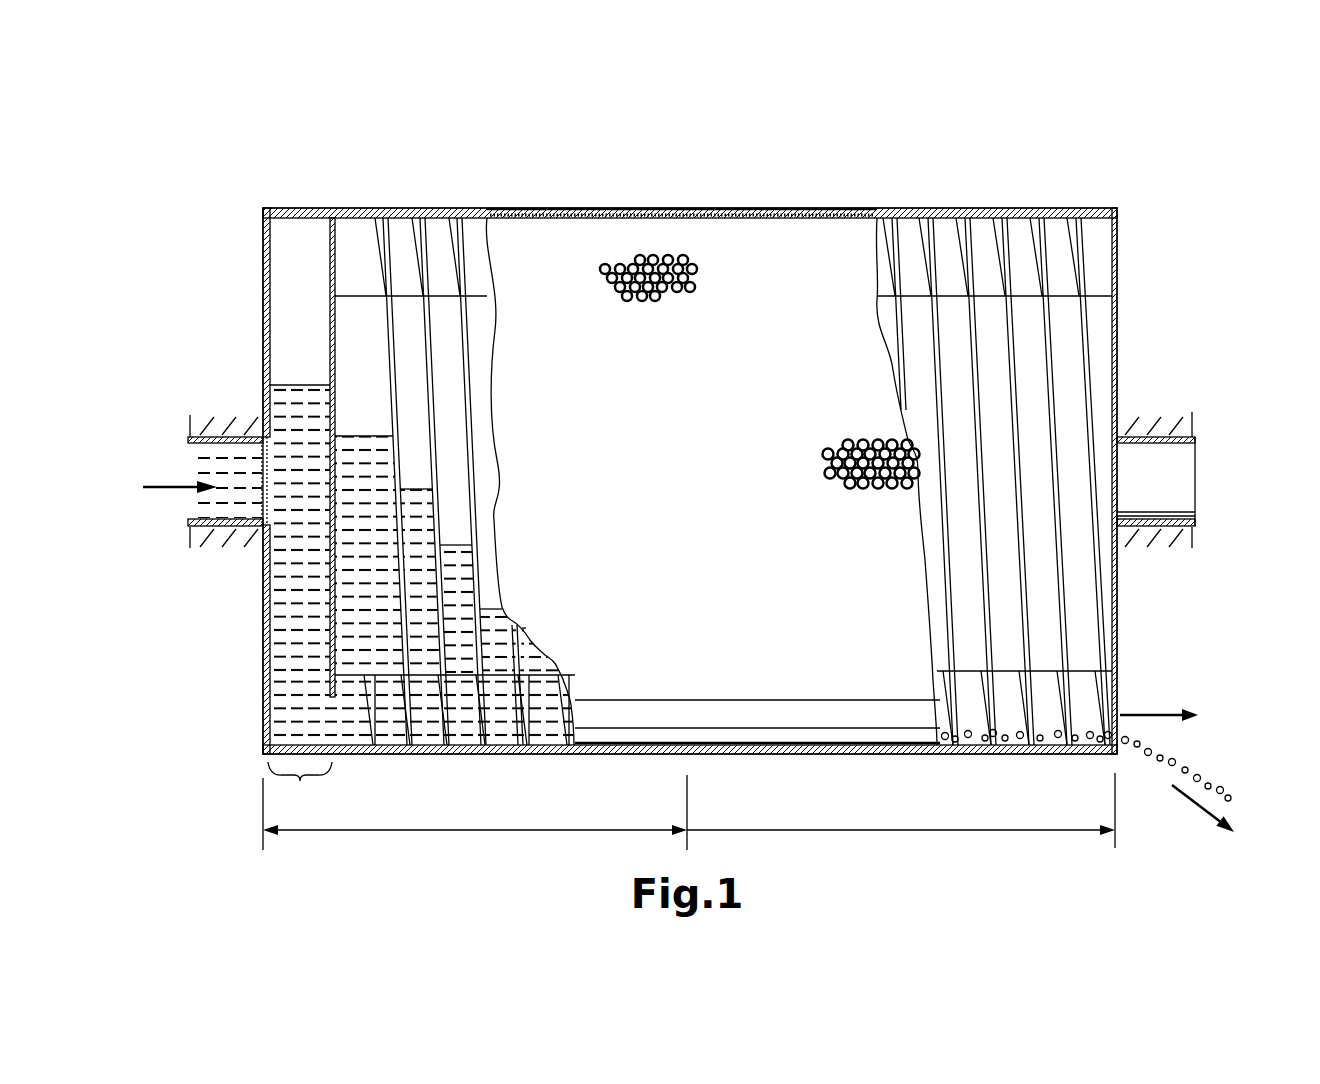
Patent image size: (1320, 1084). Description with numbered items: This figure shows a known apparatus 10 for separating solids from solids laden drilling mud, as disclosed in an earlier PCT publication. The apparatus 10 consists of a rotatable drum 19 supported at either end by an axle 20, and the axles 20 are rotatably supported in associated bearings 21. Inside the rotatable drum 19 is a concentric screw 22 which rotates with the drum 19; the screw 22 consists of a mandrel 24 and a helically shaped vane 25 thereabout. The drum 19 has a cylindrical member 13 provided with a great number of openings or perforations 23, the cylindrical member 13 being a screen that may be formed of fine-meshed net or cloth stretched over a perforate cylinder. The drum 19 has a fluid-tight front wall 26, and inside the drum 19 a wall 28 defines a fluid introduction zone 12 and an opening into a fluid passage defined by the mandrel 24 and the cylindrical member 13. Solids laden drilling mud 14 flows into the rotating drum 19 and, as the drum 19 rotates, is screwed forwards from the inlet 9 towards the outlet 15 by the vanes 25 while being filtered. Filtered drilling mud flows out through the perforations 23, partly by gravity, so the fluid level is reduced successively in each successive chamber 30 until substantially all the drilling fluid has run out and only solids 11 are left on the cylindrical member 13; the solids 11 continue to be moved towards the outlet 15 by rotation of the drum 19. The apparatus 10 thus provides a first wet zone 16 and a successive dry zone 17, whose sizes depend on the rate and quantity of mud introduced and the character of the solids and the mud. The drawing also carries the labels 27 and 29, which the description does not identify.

The apparatus for separating solids from solids laden drilling mud 10 is at (512, 203).
The rotatable drum 19 is at (290, 210).
The fluid introduction zone 12 is at (285, 605).
The concentric screw 22 is at (1115, 320).
The fluid-tight front wall 26 is at (265, 660).
The wall 28 is at (330, 300).
The first compartment liquid 29 is at (280, 385).
The inlet compartment 27 is at (300, 789).
The helically shaped vane 25 is at (385, 250).
The mandrel 24 is at (988, 330).
The chamber 30 is at (422, 740).
The cylindrical member 13 is at (607, 240).
The perforations 23 is at (665, 262).
The axle 20 is at (205, 442).
The bearings 21 is at (235, 420).
The inlet 9 is at (190, 520).
The solids laden drilling mud 14 is at (162, 488).
The outlet 15 is at (1140, 715).
The solids 11 is at (1200, 800).
The first wet zone 16 is at (462, 830).
The dry zone 17 is at (873, 830).